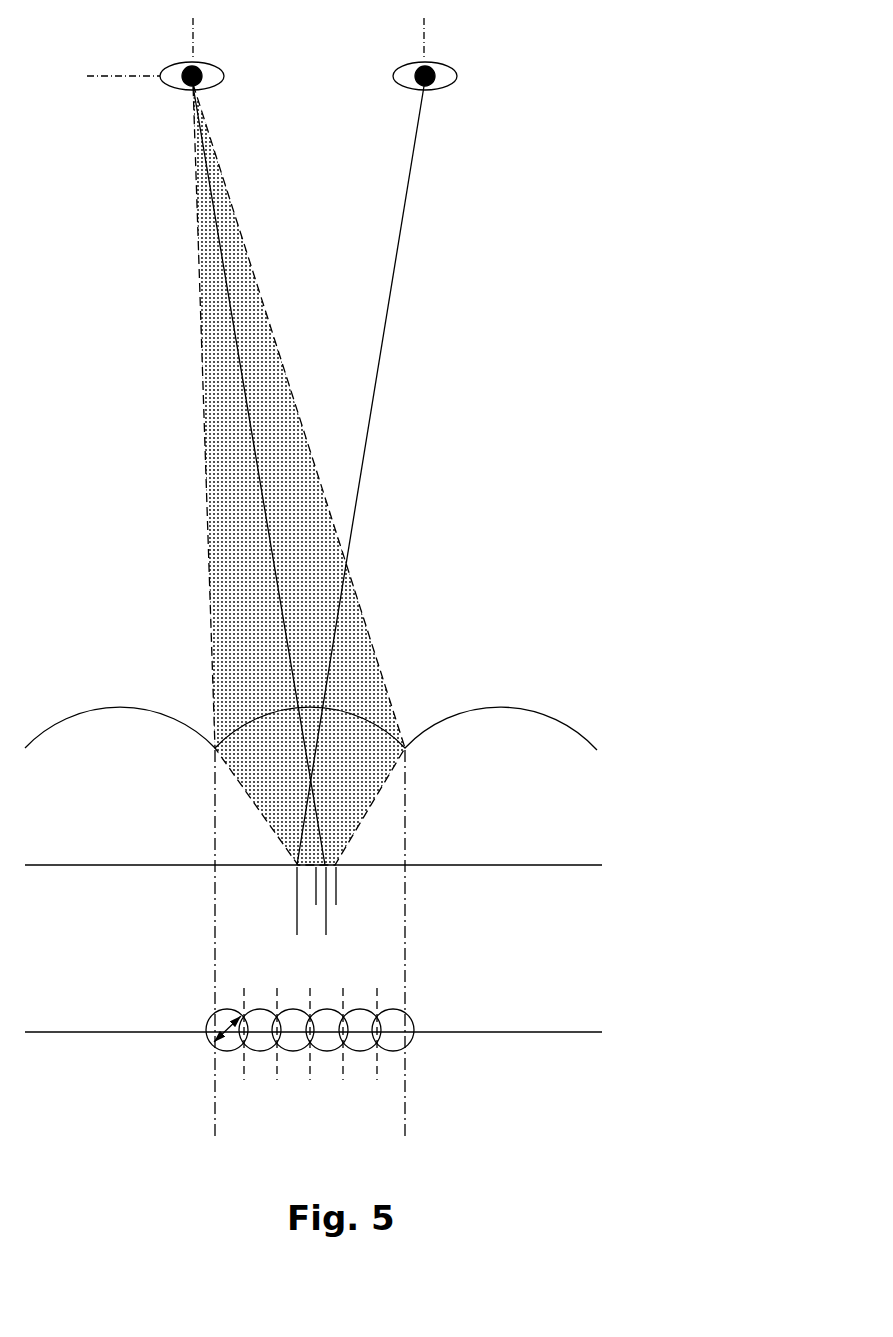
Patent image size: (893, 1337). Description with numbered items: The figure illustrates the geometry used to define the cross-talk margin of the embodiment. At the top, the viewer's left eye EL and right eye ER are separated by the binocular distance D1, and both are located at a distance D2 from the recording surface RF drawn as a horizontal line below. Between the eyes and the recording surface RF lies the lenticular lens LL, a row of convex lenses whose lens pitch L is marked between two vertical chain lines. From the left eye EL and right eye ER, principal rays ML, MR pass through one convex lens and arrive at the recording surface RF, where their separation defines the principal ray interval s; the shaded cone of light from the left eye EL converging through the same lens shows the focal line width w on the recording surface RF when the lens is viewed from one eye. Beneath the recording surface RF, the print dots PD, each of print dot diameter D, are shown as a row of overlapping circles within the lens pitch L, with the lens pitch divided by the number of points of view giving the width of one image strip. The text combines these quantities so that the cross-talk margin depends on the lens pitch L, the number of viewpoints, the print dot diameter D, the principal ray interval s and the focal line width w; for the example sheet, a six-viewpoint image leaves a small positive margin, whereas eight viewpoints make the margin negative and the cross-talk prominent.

The left eye EL is at (217, 87).
The right eye ER is at (448, 86).
The principal ray ML is at (226, 269).
The principal ray MR is at (389, 298).
The lenticular lens LL is at (521, 707).
The recording surface RF is at (544, 867).
The print dots PD is at (394, 1012).
The print dot diameter D is at (222, 1030).
The binocular distance D1 is at (420, 31).
The distance from the binocular position to the recording surface D2 is at (118, 862).
The focal line width w is at (378, 893).
The principal ray interval s is at (367, 927).
The lens pitch L is at (402, 1128).